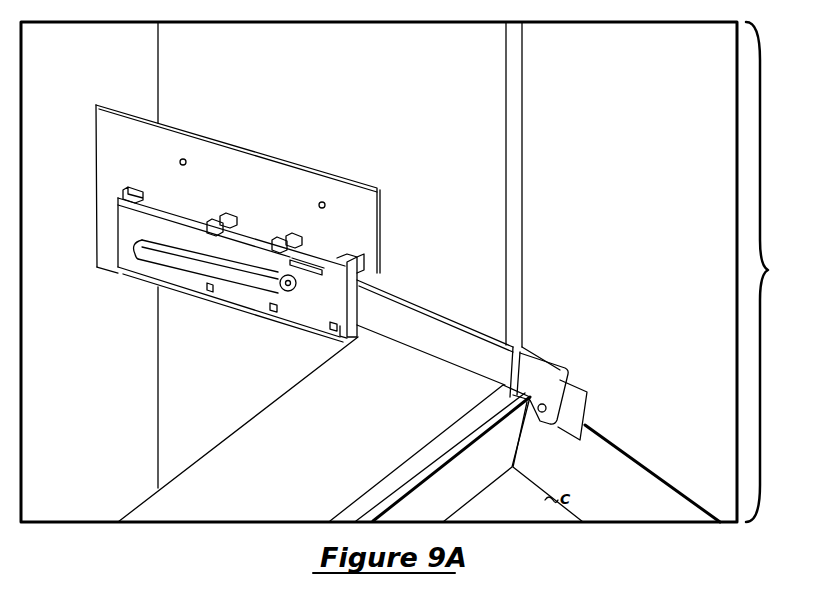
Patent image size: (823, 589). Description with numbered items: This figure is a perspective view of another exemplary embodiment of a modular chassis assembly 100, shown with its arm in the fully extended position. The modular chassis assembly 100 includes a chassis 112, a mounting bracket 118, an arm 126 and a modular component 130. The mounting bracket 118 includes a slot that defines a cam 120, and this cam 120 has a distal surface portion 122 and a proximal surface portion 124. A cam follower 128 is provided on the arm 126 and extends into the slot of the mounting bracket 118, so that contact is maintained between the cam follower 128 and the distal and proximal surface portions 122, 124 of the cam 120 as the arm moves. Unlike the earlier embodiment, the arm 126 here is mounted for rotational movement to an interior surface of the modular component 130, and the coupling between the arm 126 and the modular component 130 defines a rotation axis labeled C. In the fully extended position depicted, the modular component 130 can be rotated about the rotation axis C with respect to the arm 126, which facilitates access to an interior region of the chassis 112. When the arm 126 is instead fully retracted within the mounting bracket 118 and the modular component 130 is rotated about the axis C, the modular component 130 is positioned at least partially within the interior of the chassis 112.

The modular chassis assembly 100 is at (776, 272).
The chassis 112 is at (452, 119).
The mounting bracket 118 is at (317, 290).
The cam 120 is at (198, 265).
The distal surface portion 122 is at (152, 257).
The proximal surface portion 124 is at (270, 262).
The arm 126 is at (415, 328).
The cam follower 128 is at (288, 293).
The modular component 130 is at (642, 490).